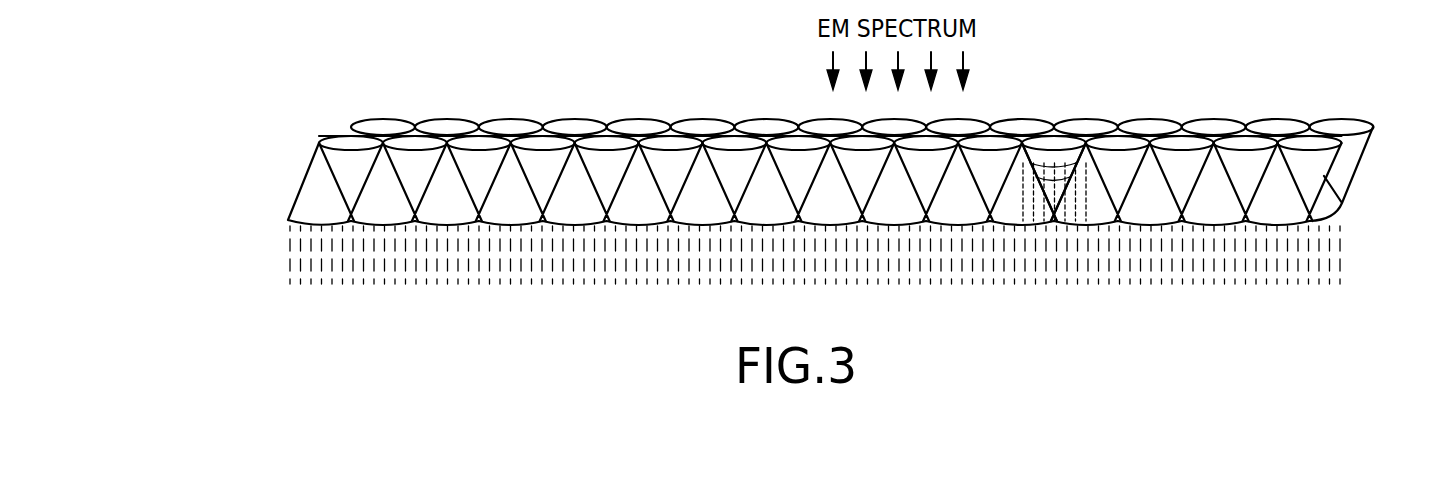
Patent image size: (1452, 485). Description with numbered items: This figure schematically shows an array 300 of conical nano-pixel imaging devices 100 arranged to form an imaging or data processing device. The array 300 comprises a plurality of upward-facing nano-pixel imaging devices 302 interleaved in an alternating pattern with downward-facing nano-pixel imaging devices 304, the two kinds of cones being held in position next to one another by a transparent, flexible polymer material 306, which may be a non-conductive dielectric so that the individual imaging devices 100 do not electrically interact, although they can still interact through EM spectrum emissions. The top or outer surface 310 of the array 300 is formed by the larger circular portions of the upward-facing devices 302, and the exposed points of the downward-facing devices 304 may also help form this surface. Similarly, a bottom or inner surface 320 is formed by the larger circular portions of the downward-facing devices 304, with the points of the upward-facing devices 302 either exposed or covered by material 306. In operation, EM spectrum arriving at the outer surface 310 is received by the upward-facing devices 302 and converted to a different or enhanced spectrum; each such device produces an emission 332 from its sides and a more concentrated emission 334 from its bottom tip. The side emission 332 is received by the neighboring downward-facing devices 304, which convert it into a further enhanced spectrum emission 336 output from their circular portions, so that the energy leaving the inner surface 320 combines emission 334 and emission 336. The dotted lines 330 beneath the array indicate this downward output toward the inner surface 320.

The array 300 is at (275, 173).
The upward-facing nano-pixel imaging devices 302 is at (553, 142).
The top or outer surface 310 is at (608, 118).
The conical nano-pixel imaging devices 100 is at (697, 127).
The transparent, flexible polymer material 306 is at (1103, 162).
The downward-facing nano-pixel imaging devices 304 is at (407, 220).
The bottom or inner surface 320 is at (545, 237).
The light rays transmitted to absorber 330 is at (1045, 268).
The emission 332 is at (1020, 210).
The concentrated emission 334 is at (1058, 232).
The spectrum emission 336 is at (307, 227).